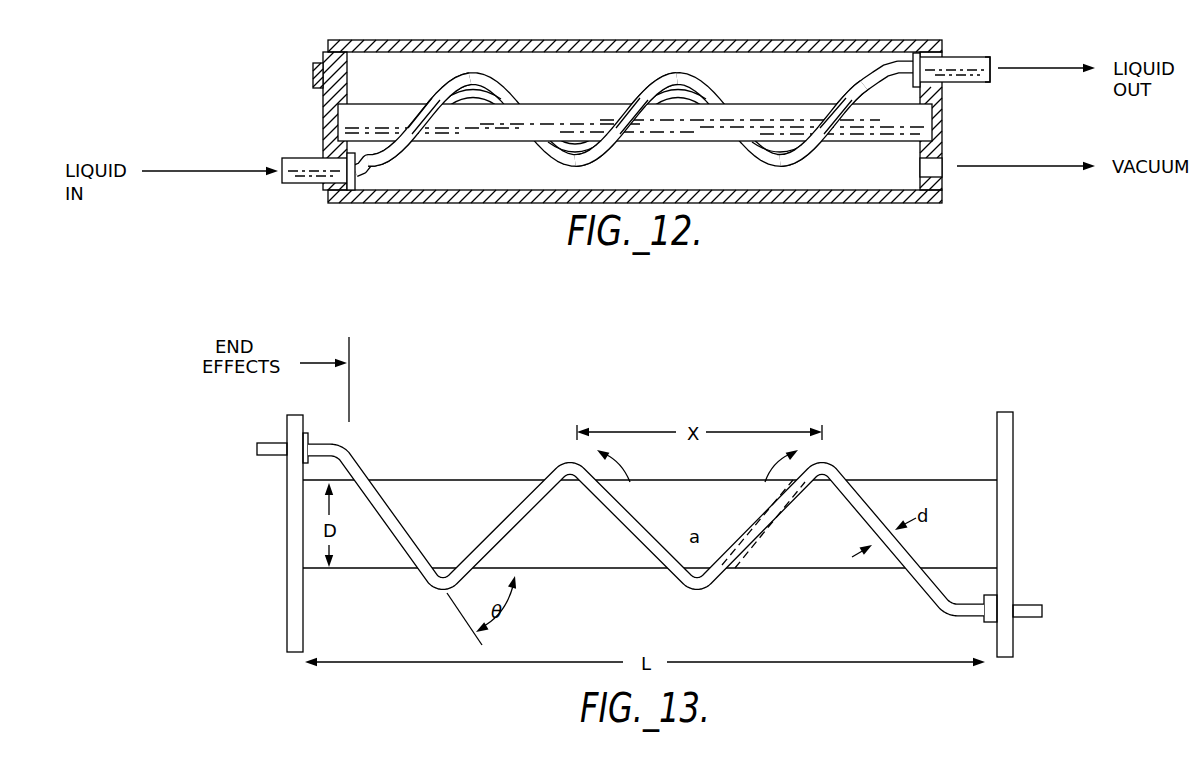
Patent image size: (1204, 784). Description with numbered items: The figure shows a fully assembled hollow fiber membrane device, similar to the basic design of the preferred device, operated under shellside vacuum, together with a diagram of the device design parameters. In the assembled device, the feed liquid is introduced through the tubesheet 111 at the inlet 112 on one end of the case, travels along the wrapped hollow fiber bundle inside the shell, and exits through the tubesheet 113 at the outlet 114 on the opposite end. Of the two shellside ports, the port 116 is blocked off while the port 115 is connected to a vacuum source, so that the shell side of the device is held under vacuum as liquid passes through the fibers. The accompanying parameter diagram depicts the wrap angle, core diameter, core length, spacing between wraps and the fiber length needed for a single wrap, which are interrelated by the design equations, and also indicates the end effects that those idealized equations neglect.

The tubesheet 111 is at (308, 152).
The inlet 112 is at (270, 182).
The tubesheet 113 is at (965, 83).
The outlet 114 is at (1004, 56).
The port 115 is at (960, 178).
The port 116 is at (316, 62).